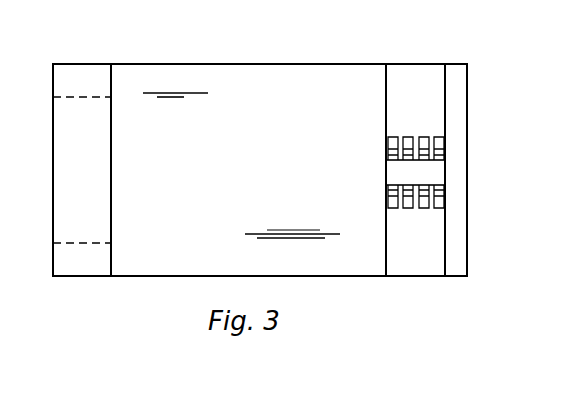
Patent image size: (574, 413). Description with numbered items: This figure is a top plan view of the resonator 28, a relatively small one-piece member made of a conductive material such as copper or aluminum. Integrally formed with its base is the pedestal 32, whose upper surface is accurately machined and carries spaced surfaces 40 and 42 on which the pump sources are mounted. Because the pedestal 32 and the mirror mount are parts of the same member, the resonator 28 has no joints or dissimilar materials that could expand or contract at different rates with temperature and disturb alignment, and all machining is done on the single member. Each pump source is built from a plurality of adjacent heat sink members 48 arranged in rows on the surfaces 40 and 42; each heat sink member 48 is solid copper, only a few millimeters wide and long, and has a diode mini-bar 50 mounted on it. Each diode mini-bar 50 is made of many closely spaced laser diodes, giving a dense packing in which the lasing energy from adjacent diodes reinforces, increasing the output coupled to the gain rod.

The resonator 28 is at (245, 60).
The spaced surface 40 is at (413, 70).
The spaced surface 42 is at (437, 253).
The pedestal portion 32 is at (402, 278).
The heat sink member 48 is at (440, 136).
The diode mini-bar 50 is at (407, 186).